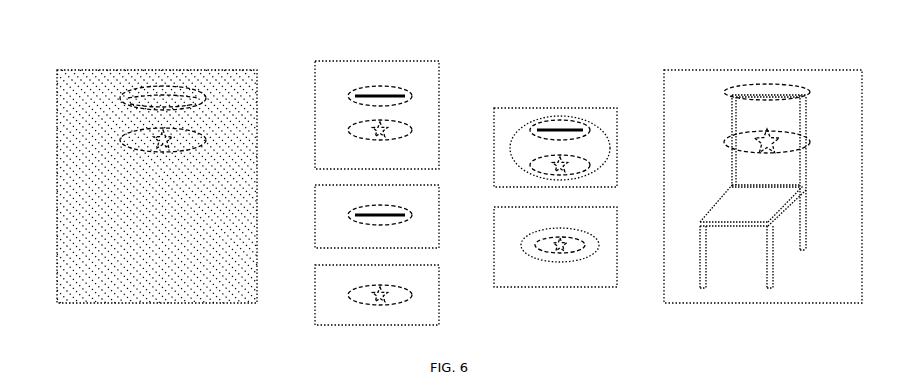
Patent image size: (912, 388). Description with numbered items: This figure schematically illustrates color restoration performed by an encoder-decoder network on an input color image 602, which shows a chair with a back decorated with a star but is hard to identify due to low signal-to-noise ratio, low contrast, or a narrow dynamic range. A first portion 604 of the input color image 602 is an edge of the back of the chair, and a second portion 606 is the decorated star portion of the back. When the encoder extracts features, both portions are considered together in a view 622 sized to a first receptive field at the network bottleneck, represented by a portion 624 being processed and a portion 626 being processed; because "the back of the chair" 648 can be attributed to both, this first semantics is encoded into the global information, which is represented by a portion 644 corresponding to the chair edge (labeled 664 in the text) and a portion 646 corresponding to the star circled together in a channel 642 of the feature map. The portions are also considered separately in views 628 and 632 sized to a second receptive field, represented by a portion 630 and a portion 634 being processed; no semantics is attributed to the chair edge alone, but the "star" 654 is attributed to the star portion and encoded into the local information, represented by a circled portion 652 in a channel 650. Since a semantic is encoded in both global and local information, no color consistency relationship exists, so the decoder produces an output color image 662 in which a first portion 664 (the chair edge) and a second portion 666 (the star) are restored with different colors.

The input color image 602 is at (113, 70).
The first portion of the input color image 604 is at (163, 88).
The second portion of the input color image 606 is at (140, 150).
The view 622 is at (332, 61).
The portion being processed 624 is at (395, 90).
The portion being processed 626 is at (405, 122).
The view 628 is at (320, 185).
The portion being processed 630 is at (408, 210).
The view 632 is at (320, 265).
The portion being processed 634 is at (408, 290).
The channel of the feature map 642 is at (508, 108).
The first object image 644 is at (570, 118).
The portion corresponding to the second portion 646 is at (590, 170).
The back of the chair 648 is at (616, 150).
The channel of the feature map 650 is at (512, 287).
The portion corresponding to the second portion 652 is at (590, 252).
The star 654 is at (600, 232).
The output color image 662 is at (720, 70).
The first portion of the output color image 664 is at (767, 84).
The second portion of the output color image 666 is at (790, 147).